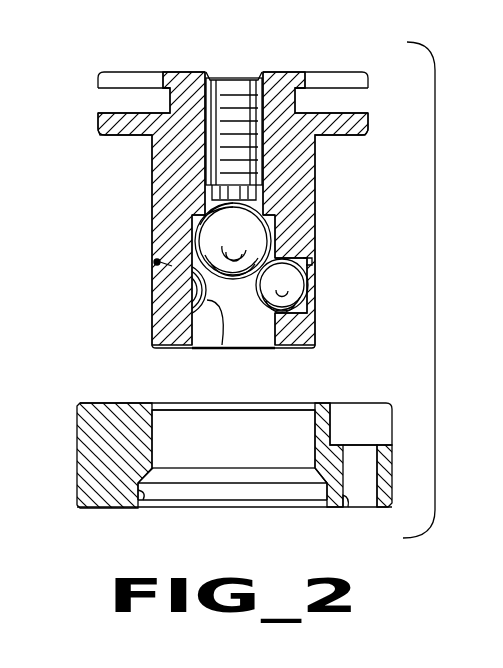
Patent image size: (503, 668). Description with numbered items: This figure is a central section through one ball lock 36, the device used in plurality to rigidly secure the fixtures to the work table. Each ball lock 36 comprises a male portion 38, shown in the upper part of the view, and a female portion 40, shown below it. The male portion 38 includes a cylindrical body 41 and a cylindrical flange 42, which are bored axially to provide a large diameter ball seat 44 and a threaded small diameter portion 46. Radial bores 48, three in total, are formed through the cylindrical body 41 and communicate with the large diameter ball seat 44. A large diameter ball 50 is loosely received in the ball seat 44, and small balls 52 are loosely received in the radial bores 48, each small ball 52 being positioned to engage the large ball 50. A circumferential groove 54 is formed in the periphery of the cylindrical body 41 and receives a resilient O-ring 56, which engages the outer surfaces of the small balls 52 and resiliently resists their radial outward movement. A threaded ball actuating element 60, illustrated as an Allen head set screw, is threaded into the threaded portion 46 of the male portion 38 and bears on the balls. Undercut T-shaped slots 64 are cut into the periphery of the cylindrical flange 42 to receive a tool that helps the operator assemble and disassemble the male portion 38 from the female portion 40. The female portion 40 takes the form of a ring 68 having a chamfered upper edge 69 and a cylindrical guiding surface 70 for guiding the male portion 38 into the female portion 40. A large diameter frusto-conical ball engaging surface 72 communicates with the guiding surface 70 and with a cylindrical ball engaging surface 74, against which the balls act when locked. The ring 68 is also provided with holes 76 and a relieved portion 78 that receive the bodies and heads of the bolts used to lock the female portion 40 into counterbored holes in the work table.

The ball lock 36 is at (304, 60).
The male portion 38 is at (152, 188).
The female portion 40 is at (76, 505).
The cylindrical body 41 is at (318, 214).
The cylindrical flange 42 is at (363, 128).
The large diameter ball seat 44 is at (193, 232).
The threaded small diameter portion 46 is at (218, 72).
The radial bores 48 is at (307, 313).
The large diameter ball 50 is at (270, 213).
The small balls 52 is at (300, 287).
The circumferential groove 54 is at (152, 264).
The resilient O-ring 56 is at (311, 260).
The threaded ball actuating element 60 is at (236, 72).
The undercut T-shaped slots 64 is at (110, 102).
The ring 68 is at (77, 452).
The chamfered upper edge 69 is at (152, 403).
The cylindrical guiding surface 70 is at (250, 455).
The frusto-conical ball engaging surface 72 is at (153, 473).
The cylindrical ball engaging surface 74 is at (143, 500).
The holes 76 is at (348, 510).
The relieved portion 78 is at (365, 410).